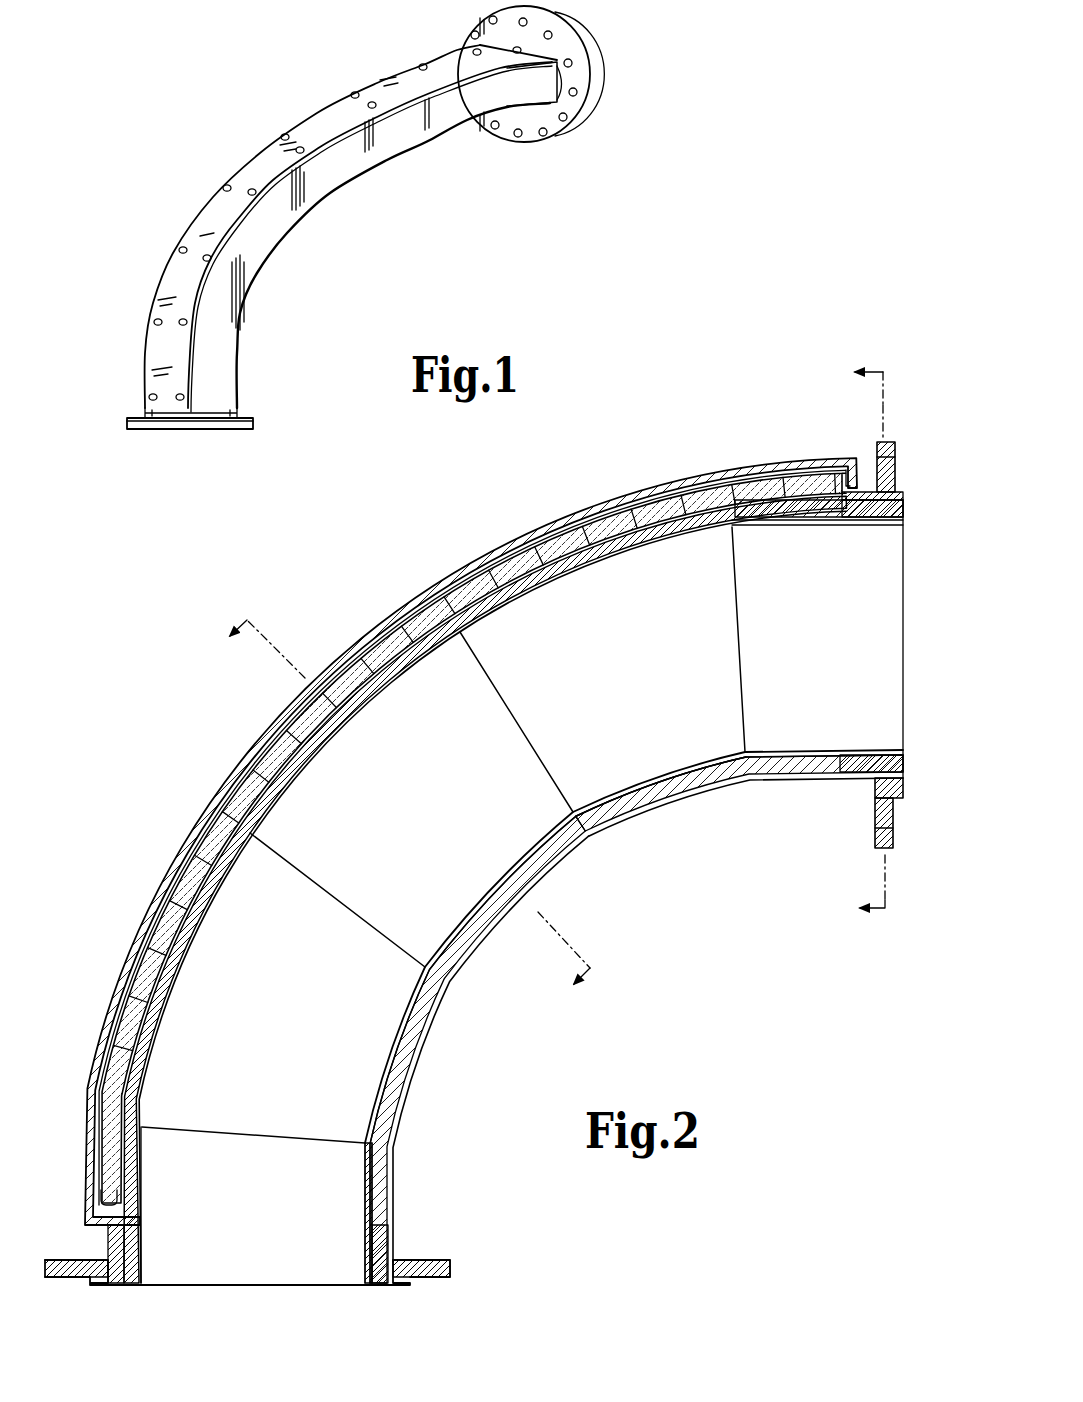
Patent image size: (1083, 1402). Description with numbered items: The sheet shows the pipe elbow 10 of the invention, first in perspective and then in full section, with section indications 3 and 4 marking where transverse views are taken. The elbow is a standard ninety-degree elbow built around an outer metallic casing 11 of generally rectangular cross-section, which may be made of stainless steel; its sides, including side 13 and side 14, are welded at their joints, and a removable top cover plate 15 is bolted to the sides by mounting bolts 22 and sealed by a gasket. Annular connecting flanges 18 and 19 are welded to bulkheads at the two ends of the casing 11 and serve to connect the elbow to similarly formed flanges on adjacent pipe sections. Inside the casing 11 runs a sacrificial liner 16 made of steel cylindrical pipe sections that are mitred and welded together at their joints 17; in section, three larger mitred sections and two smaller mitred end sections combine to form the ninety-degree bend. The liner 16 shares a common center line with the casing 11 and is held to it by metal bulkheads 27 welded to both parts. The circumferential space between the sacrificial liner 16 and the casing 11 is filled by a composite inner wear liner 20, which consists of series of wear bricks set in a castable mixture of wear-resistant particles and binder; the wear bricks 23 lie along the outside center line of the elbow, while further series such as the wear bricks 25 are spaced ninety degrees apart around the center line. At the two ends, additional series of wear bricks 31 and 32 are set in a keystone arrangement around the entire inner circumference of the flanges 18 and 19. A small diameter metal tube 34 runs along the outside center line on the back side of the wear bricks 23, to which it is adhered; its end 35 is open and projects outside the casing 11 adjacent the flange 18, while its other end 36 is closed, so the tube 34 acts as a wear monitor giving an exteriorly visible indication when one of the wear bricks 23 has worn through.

In FIG. 1, the pipe elbow 10 is at (390, 198).
In FIG. 1, the outer metallic casing 11 is at (332, 180).
In FIG. 2, the outer metallic casing 11 is at (596, 850).
In FIG. 2, the side 13 is at (715, 792).
In FIG. 1, the side 14 is at (449, 118).
In FIG. 1, the removable top cover plate 15 is at (395, 76).
In FIG. 2, the removable top cover plate 15 is at (469, 562).
In FIG. 2, the sacrificial liner 16 is at (596, 805).
In FIG. 2, the joints 17 is at (519, 714).
In FIG. 1, the connecting flange 18 is at (575, 77).
In FIG. 2, the connecting flange 18 is at (896, 815).
In FIG. 1, the connecting flange 19 is at (253, 416).
In FIG. 2, the connecting flange 19 is at (440, 1262).
In FIG. 2, the composite inner wear liner 20 is at (447, 1035).
In FIG. 1, the mounting bolts 22 is at (182, 232).
In FIG. 2, the wear bricks 23 is at (758, 508).
In FIG. 2, the wear bricks 25 is at (441, 1001).
In FIG. 2, the metal bulkheads 27 is at (622, 556).
In FIG. 2, the wear bricks 31 is at (903, 513).
In FIG. 2, the wear bricks 32 is at (393, 1241).
In FIG. 2, the small diameter metal tube 34 is at (352, 664).
In FIG. 2, the end of the tube 35 is at (858, 470).
In FIG. 2, the end of the tube 36 is at (94, 1196).
In FIG. 2, the section line 3- 3 is at (858, 634).
In FIG. 2, the section line 4- 4 is at (404, 815).